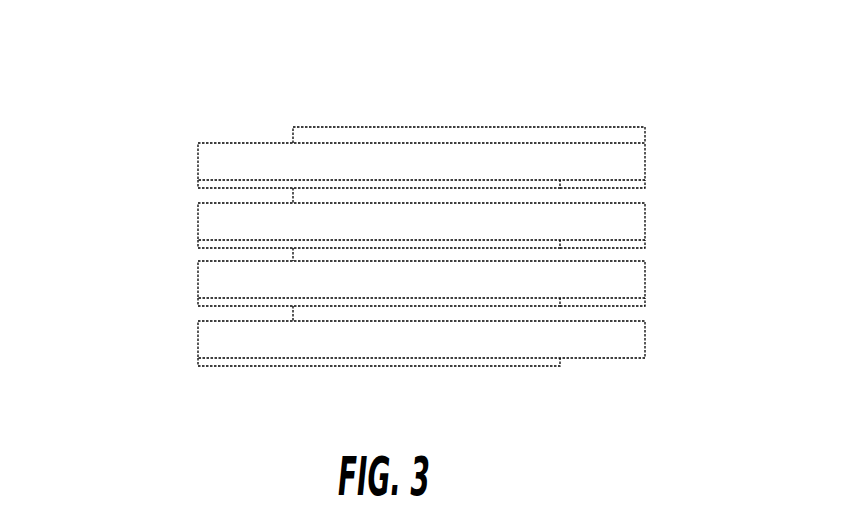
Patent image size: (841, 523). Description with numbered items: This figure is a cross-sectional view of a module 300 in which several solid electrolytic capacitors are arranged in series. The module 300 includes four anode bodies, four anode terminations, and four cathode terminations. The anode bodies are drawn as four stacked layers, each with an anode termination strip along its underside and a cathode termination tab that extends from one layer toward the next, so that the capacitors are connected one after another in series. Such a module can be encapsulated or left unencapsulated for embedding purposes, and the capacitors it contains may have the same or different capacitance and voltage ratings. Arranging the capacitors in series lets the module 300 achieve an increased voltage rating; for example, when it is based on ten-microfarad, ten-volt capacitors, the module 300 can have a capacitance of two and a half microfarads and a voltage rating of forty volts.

The module 300 is at (642, 78).